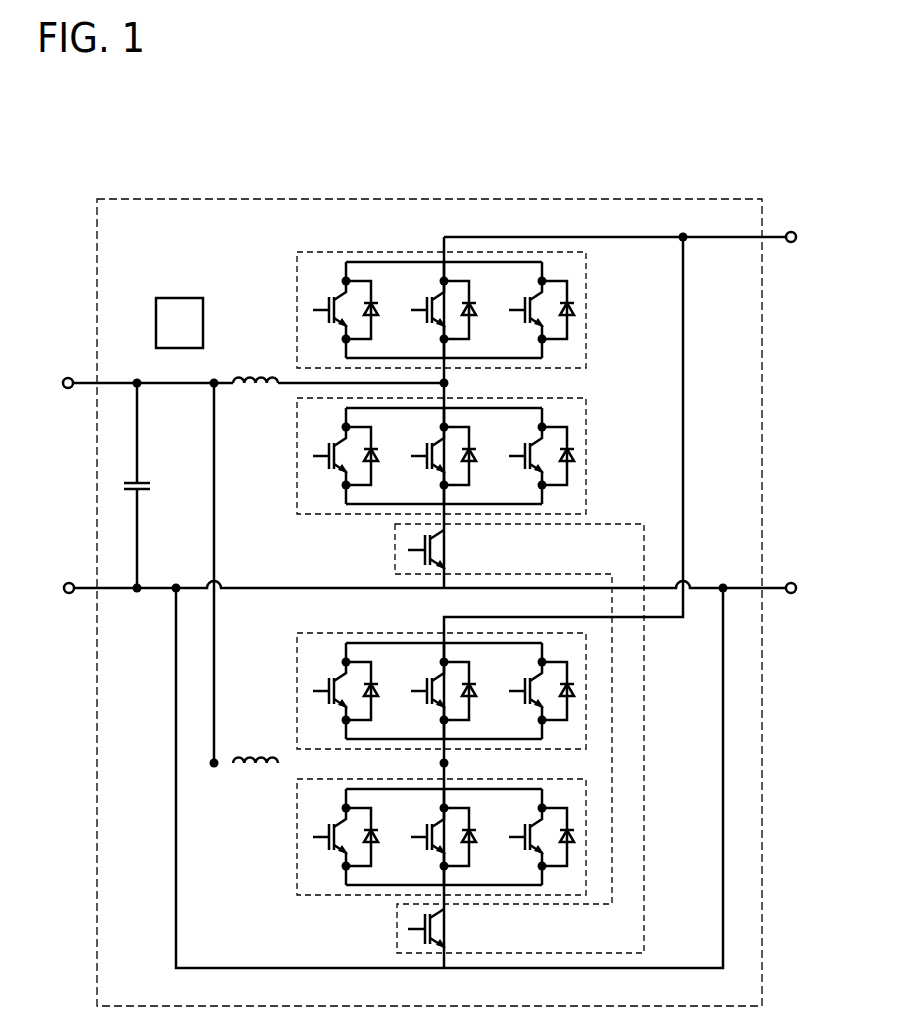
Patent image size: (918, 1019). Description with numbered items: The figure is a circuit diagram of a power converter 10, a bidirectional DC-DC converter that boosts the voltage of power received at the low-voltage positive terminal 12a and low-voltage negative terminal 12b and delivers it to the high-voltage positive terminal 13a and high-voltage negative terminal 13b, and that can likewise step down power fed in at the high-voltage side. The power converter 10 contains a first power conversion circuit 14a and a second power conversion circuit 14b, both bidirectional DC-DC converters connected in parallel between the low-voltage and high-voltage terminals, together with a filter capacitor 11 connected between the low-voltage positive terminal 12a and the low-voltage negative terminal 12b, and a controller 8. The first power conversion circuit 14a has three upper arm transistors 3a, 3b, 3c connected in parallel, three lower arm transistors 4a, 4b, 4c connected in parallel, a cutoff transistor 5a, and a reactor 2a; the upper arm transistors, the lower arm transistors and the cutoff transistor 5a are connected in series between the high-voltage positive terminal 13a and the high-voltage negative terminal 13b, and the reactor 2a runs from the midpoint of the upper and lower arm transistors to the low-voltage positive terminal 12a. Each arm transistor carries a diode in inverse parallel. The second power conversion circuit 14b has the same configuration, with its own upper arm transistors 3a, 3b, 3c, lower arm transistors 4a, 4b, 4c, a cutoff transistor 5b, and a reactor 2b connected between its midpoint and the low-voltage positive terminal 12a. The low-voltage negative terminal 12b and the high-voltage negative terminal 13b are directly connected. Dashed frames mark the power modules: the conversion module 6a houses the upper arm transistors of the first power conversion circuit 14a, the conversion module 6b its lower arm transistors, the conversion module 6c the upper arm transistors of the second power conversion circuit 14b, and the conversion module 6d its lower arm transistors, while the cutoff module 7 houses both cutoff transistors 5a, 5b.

The power converter 10 is at (176, 199).
The controller 8 is at (180, 298).
The filter capacitor 11 is at (143, 482).
The low-voltage positive terminal 12a is at (68, 378).
The low-voltage negative terminal 12b is at (69, 583).
The high-voltage positive terminal 13a is at (792, 232).
The high-voltage negative terminal 13b is at (792, 583).
The first power conversion circuit 14a is at (266, 280).
The second power conversion circuit 14b is at (280, 658).
The reactor 2a is at (262, 392).
The reactor 2b is at (262, 772).
The upper arm transistor 3a is at (343, 504).
The upper arm transistor 3b is at (440, 504).
The upper arm transistor 3c is at (538, 504).
The lower arm transistor 4a is at (343, 650).
The lower arm transistor 4b is at (440, 650).
The lower arm transistor 4c is at (538, 650).
The cutoff transistor 5a is at (410, 553).
The cutoff transistor 5b is at (408, 933).
The conversion module 6a is at (588, 283).
The conversion module 6b is at (588, 428).
The conversion module 6c is at (297, 697).
The conversion module 6d is at (297, 843).
The cutoff module 7 is at (632, 524).